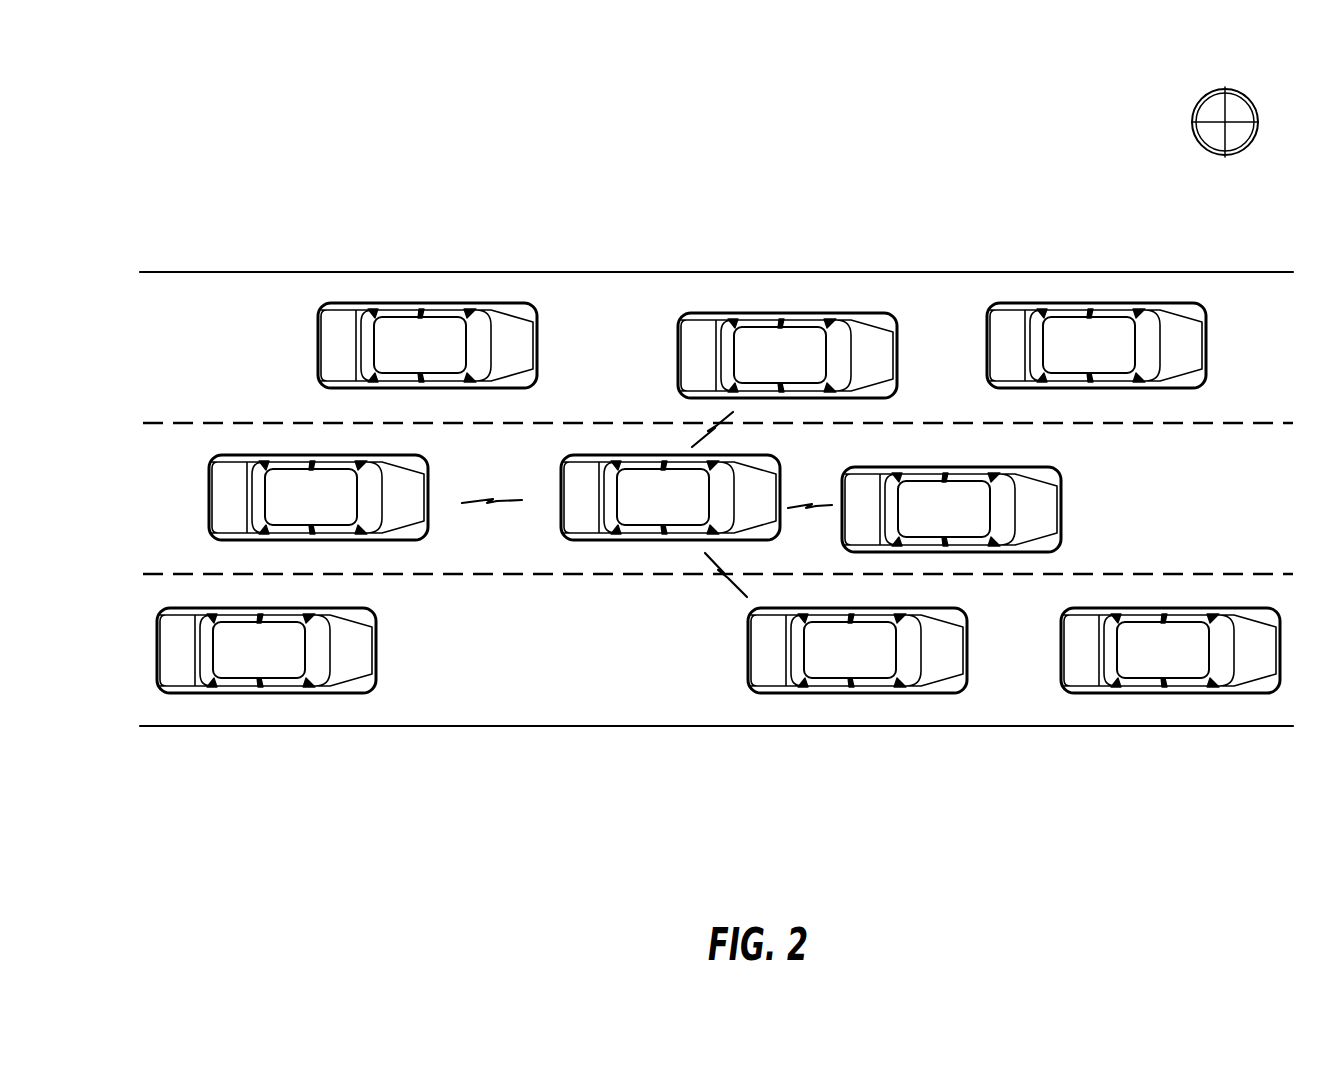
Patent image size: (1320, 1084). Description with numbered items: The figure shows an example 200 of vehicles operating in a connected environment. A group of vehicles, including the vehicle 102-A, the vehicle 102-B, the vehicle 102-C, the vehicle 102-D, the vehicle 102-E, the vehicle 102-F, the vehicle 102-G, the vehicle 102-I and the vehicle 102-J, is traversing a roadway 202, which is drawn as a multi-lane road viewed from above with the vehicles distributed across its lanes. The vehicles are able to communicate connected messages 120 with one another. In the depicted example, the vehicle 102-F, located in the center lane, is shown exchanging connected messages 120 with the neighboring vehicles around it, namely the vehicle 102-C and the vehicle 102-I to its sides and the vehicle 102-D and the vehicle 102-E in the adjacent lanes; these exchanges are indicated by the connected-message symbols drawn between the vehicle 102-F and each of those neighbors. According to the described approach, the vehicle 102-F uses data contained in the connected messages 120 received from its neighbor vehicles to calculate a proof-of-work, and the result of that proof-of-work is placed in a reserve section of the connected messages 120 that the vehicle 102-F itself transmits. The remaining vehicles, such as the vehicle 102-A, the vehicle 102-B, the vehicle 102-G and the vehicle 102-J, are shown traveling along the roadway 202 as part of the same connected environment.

The example of vehicles in a connected environment 200 is at (228, 73).
The roadway 202 is at (1103, 271).
The connected messages 120 is at (647, 509).
The vehicle 102-A is at (1170, 650).
The vehicle 102-B is at (1096, 345).
The vehicle 102-C is at (951, 509).
The vehicle 102-D is at (857, 650).
The vehicle 102-E is at (787, 355).
The vehicle 102-F is at (670, 497).
The vehicle 102-G is at (427, 345).
The vehicle 102-I is at (318, 497).
The vehicle 102-J is at (266, 650).